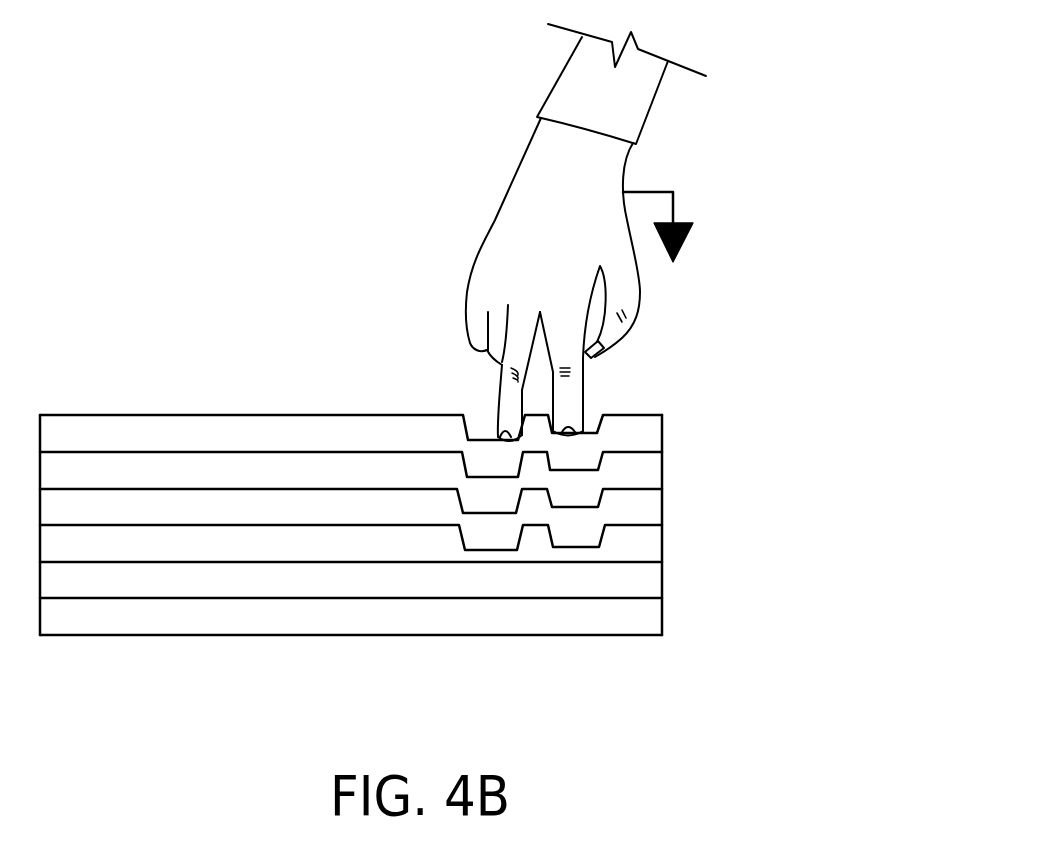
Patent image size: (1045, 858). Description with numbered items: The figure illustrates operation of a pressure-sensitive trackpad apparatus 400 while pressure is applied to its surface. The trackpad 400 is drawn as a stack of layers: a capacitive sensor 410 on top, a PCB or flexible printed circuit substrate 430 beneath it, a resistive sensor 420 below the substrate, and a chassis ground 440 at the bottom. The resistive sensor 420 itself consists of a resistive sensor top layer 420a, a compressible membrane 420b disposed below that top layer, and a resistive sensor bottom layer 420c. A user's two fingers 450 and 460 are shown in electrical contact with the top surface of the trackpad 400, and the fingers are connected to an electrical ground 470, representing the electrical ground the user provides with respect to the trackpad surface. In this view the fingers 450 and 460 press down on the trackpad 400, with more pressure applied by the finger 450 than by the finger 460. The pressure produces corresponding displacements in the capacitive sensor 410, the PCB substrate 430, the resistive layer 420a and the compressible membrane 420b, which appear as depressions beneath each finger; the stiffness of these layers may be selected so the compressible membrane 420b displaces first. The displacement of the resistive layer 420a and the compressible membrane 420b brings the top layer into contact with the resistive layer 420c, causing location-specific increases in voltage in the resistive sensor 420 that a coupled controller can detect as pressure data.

The pressure-sensitive trackpad apparatus 400 is at (196, 318).
The capacitive sensor 410 is at (663, 433).
The resistive sensor 420 is at (423, 547).
The resistive sensor top layer 420a is at (663, 508).
The compressible membrane 420b is at (663, 545).
The resistive sensor bottom layer 420c is at (390, 581).
The PCB or FPC substrate 430 is at (663, 470).
The chassis ground 440 is at (663, 613).
The finger 450 is at (498, 398).
The finger 460 is at (585, 393).
The electrical ground 470 is at (658, 215).